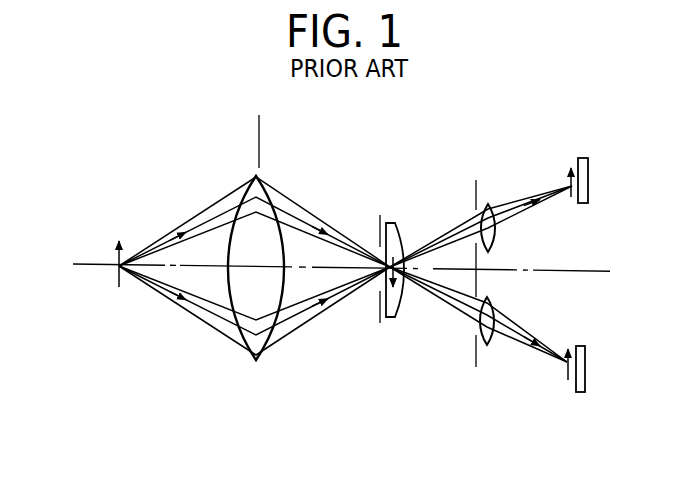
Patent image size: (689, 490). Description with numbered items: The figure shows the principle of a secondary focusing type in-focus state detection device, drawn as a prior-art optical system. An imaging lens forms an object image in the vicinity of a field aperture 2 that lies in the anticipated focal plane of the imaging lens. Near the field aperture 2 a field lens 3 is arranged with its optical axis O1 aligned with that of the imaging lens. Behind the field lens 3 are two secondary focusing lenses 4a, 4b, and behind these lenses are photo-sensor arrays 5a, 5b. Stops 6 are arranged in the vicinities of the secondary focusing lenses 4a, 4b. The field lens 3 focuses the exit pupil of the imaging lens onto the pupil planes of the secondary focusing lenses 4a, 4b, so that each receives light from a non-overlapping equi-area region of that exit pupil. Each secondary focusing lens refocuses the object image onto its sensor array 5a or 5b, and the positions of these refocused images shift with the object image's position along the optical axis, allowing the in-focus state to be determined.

The optical axis O1 is at (88, 266).
The field aperture 2 is at (380, 216).
The field lens 3 is at (398, 222).
The secondary focusing lens 4a is at (489, 205).
The secondary focusing lens 4b is at (490, 346).
The photo-sensor array 5a is at (583, 158).
The photo-sensor array 5b is at (580, 393).
The stops 6 is at (475, 186).